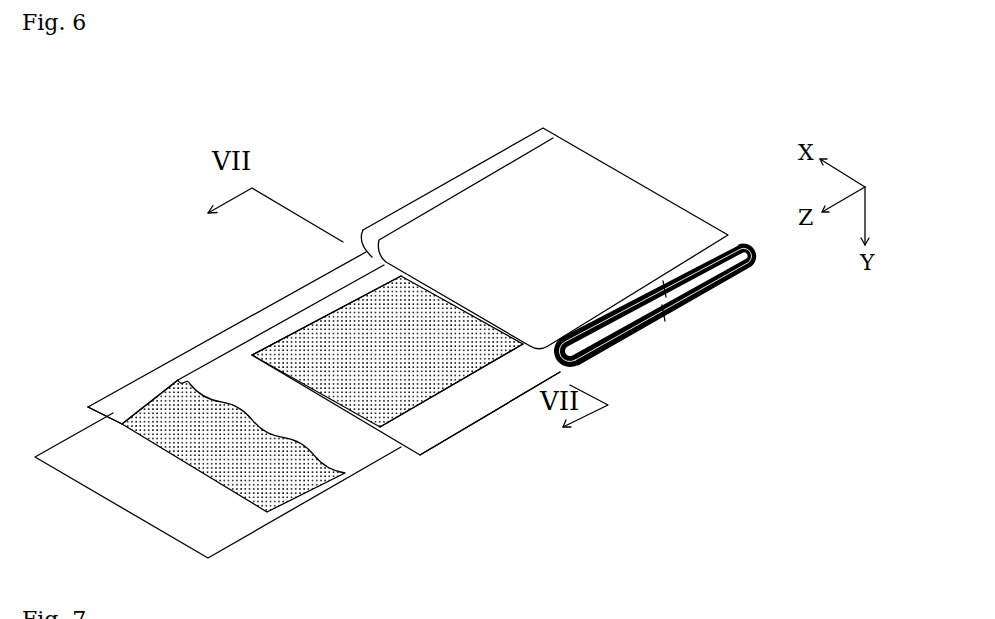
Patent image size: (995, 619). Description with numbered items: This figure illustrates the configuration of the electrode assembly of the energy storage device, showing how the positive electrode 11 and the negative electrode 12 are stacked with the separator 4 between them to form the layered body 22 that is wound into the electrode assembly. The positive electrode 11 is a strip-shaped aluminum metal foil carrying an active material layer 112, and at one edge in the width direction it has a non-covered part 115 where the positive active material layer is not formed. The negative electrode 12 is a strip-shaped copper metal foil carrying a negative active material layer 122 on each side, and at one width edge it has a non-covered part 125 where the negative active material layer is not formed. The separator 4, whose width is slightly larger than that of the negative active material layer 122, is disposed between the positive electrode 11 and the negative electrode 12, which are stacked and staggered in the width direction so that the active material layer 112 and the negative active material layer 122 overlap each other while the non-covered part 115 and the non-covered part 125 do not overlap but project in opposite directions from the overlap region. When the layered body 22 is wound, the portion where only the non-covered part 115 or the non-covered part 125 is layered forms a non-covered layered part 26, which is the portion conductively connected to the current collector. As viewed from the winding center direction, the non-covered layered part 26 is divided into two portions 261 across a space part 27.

The separator 4 is at (356, 465).
The positive electrode 11 is at (345, 298).
The negative electrode 12 is at (137, 380).
The active material layer 112 is at (303, 348).
The non-covered part 115 is at (458, 416).
The negative active material layer 122 is at (272, 484).
The non-covered part 125 is at (179, 362).
The layered body 22 is at (651, 337).
The non-covered layered part 26 is at (462, 181).
The non-covered layered part divided in two 261 is at (667, 292).
The space part 27 is at (754, 270).